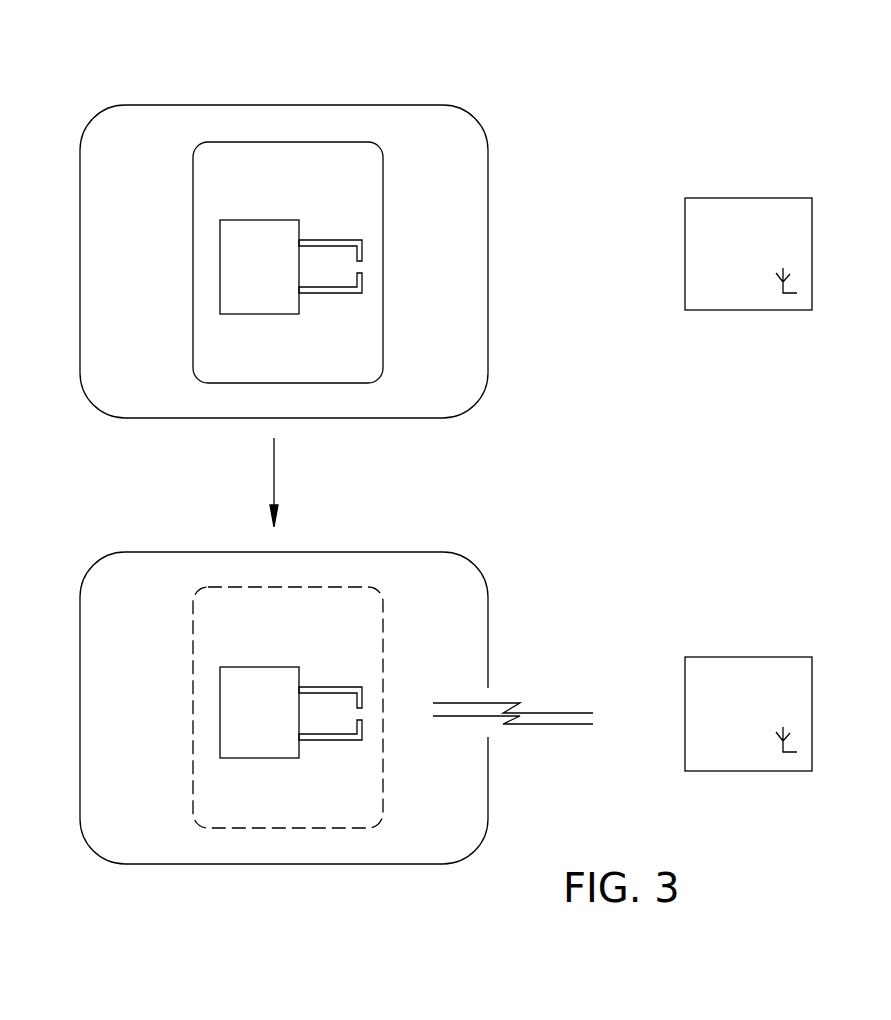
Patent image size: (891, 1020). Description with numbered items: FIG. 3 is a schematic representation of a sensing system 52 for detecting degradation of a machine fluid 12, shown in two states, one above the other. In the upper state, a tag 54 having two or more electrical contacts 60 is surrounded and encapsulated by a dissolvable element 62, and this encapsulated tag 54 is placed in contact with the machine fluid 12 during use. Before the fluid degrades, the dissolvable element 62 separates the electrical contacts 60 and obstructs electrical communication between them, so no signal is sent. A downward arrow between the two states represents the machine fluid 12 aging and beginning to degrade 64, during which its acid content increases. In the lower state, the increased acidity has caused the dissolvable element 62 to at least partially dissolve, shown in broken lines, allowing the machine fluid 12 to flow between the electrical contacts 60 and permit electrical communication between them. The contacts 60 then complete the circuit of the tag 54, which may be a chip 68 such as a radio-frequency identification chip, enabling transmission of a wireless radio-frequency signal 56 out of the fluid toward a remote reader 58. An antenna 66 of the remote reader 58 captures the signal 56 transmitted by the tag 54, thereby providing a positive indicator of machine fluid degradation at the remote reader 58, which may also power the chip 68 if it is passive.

The machine fluid 12 is at (395, 105).
The sensing system 52 is at (617, 86).
The tag 54 is at (243, 220).
The signal 56 is at (481, 702).
The remote reader 58 is at (773, 198).
The electrical contacts 60 is at (328, 239).
The dissolvable element 62 is at (226, 163).
The degradation of the machine fluid 64 is at (284, 482).
The antenna 66 is at (787, 282).
The chip 68 is at (252, 651).